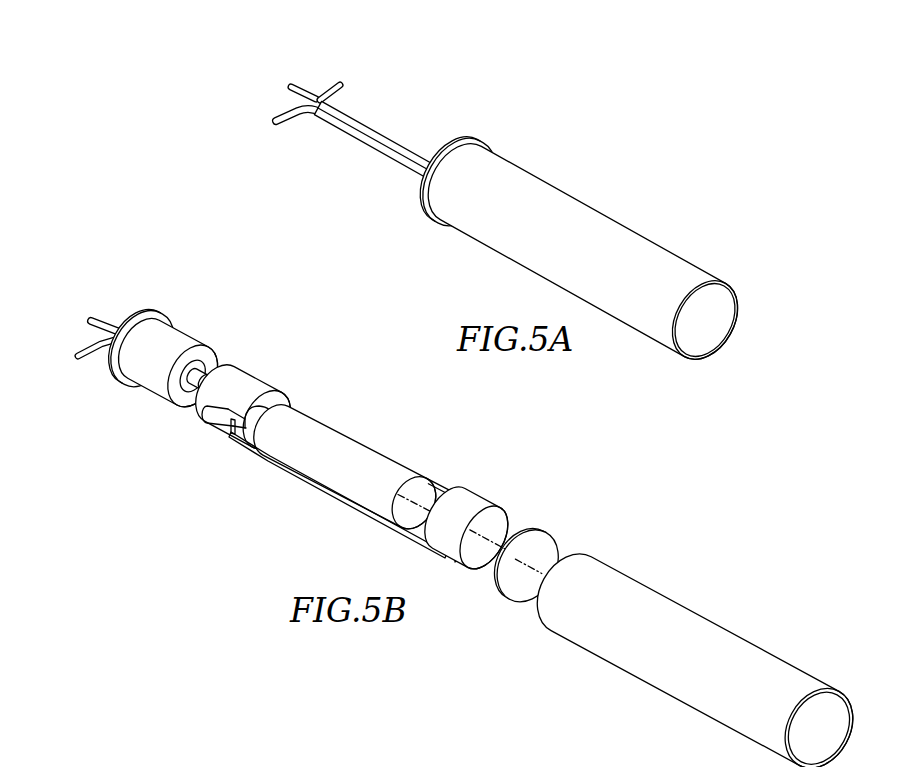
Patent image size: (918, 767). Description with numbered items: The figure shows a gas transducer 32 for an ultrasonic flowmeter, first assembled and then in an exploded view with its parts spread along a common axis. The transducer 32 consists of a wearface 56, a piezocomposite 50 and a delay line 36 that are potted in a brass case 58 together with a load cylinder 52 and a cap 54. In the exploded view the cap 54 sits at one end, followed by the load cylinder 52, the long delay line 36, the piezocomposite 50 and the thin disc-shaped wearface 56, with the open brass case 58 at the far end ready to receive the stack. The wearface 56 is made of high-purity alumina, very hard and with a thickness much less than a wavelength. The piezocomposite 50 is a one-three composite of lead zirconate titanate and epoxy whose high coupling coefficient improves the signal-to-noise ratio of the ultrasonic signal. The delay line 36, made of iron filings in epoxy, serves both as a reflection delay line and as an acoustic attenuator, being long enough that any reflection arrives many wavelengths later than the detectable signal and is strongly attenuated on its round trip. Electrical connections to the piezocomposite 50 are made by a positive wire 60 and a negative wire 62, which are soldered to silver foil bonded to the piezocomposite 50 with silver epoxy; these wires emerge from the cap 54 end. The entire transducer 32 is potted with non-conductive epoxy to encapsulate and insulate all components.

In FIG. 5A, the transducer 32 is at (596, 194).
In FIG. 5B, the delay line 36 is at (352, 433).
In FIG. 5B, the piezocomposite 50 is at (478, 502).
In FIG. 5B, the load cylinder 52 is at (247, 375).
In FIG. 5B, the cap 54 is at (185, 331).
In FIG. 5B, the wearface 56 is at (527, 530).
In FIG. 5B, the brass case 58 is at (684, 607).
In FIG. 5B, the (+) wire 60 is at (83, 364).
In FIG. 5B, the (−) wire 62 is at (106, 321).